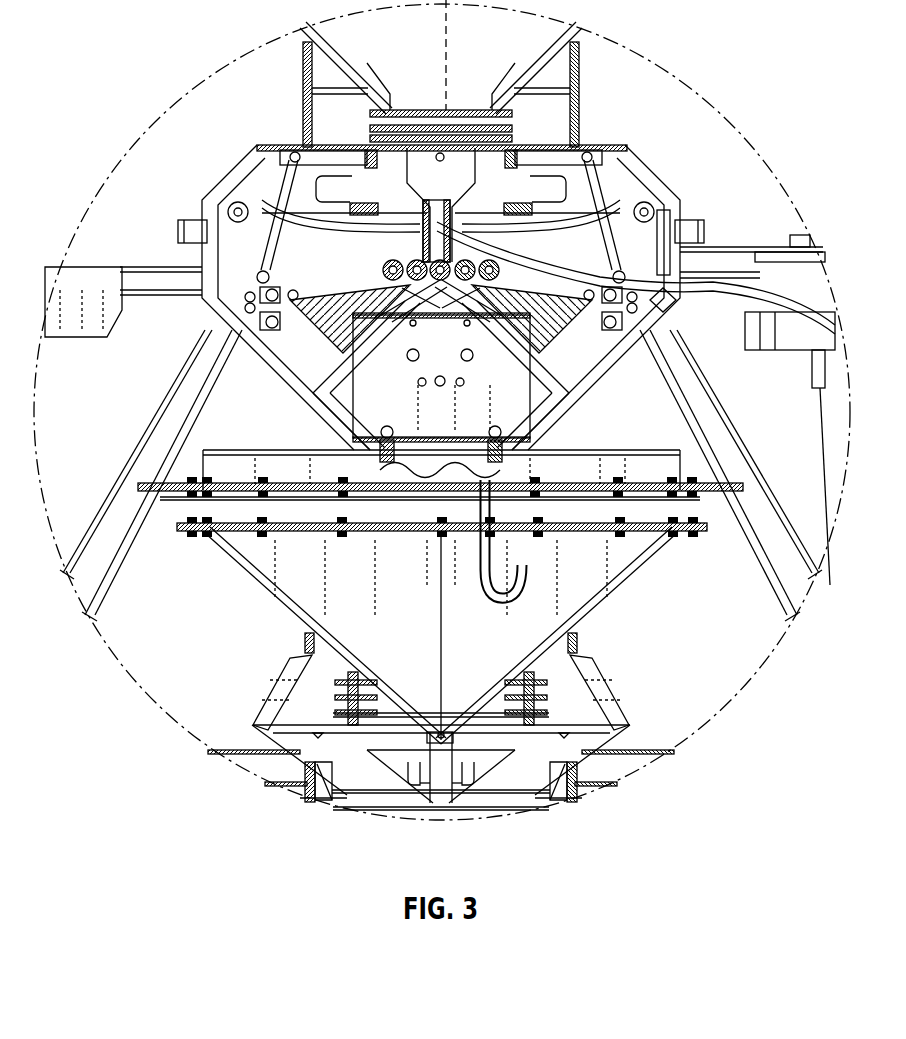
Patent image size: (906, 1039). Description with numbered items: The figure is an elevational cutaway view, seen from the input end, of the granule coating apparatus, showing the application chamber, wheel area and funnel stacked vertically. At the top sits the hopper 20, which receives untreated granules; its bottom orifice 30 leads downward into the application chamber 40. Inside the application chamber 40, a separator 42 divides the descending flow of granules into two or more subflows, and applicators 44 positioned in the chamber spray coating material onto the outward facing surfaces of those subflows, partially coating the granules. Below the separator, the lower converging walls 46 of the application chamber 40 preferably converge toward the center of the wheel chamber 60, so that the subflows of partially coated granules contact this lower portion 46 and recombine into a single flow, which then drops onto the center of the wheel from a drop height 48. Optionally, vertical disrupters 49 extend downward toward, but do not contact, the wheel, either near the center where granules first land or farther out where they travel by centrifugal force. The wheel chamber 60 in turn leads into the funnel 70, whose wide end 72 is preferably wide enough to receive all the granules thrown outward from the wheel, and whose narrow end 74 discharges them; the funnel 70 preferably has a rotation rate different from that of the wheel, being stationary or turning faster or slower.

The hopper 20 is at (277, 52).
The bottom orifice 30 is at (460, 105).
The application chamber 40 is at (203, 190).
The separator 42 is at (410, 305).
The applicators 44 is at (587, 302).
The lower converging walls 46 is at (283, 450).
The drop height 48 is at (545, 478).
The vertical disrupters 49 is at (397, 430).
The wheel chamber 60 is at (198, 470).
The funnel 70 is at (277, 572).
The wide end 72 is at (647, 535).
The narrow end 74 is at (377, 690).